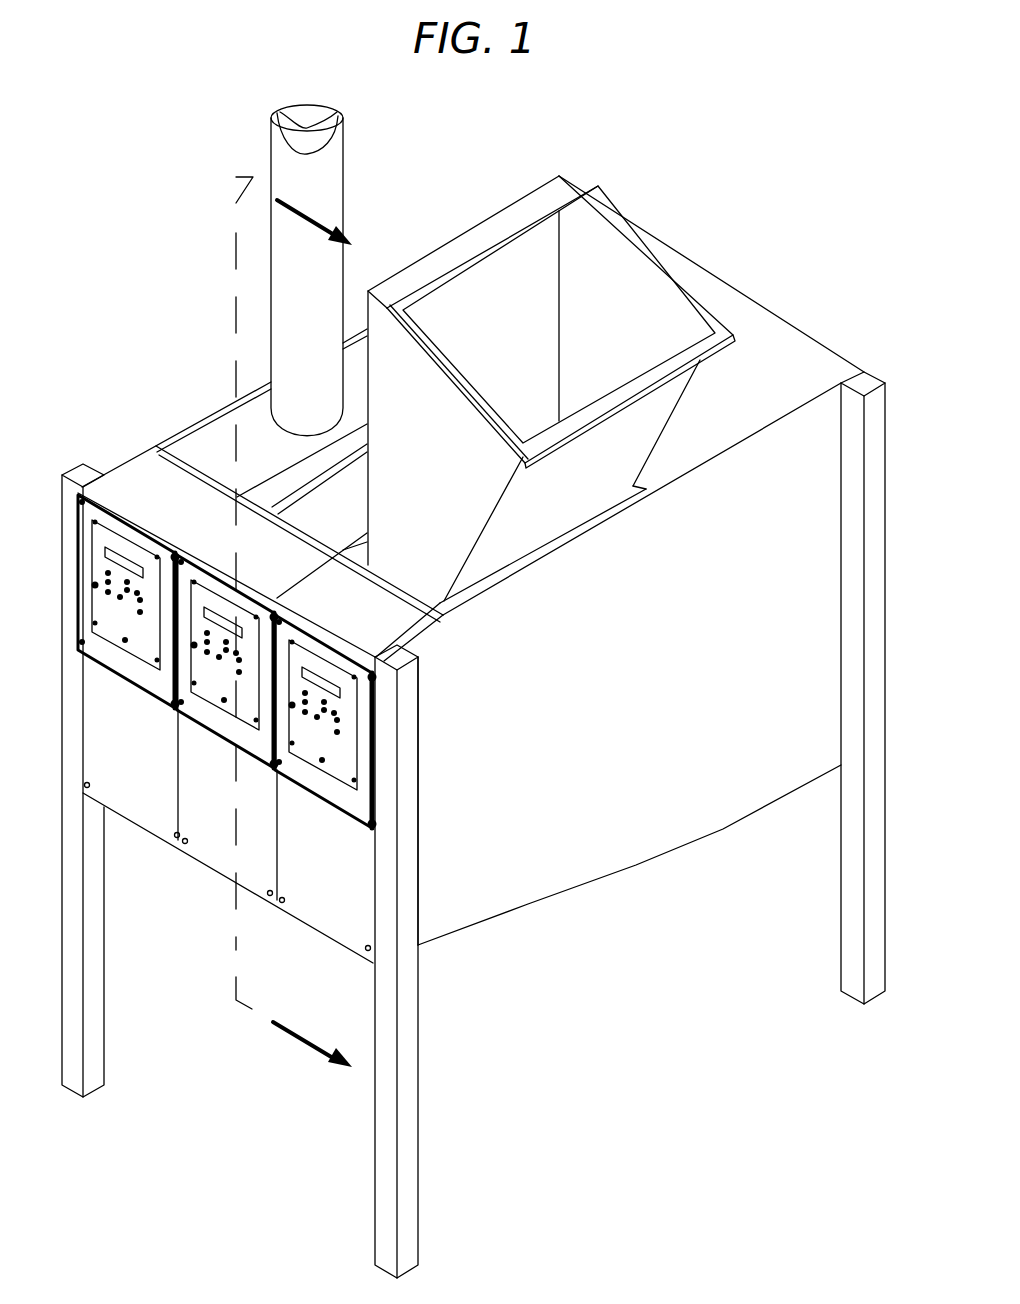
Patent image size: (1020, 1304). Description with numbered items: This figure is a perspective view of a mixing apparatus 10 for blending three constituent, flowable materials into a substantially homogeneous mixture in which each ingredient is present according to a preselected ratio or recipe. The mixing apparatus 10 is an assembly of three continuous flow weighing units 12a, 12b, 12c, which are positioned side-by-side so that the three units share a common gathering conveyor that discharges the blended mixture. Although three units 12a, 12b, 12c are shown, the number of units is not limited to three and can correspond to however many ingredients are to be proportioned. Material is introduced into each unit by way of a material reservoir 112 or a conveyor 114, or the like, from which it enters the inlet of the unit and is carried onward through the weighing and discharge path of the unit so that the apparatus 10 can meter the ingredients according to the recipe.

The mixing apparatus 10 is at (686, 1088).
The continuous flow weighing unit 12a is at (523, 873).
The continuous flow weighing unit 12b is at (207, 850).
The continuous flow weighing unit 12c is at (140, 467).
The material reservoir 112 is at (637, 267).
The conveyor 114 is at (333, 195).